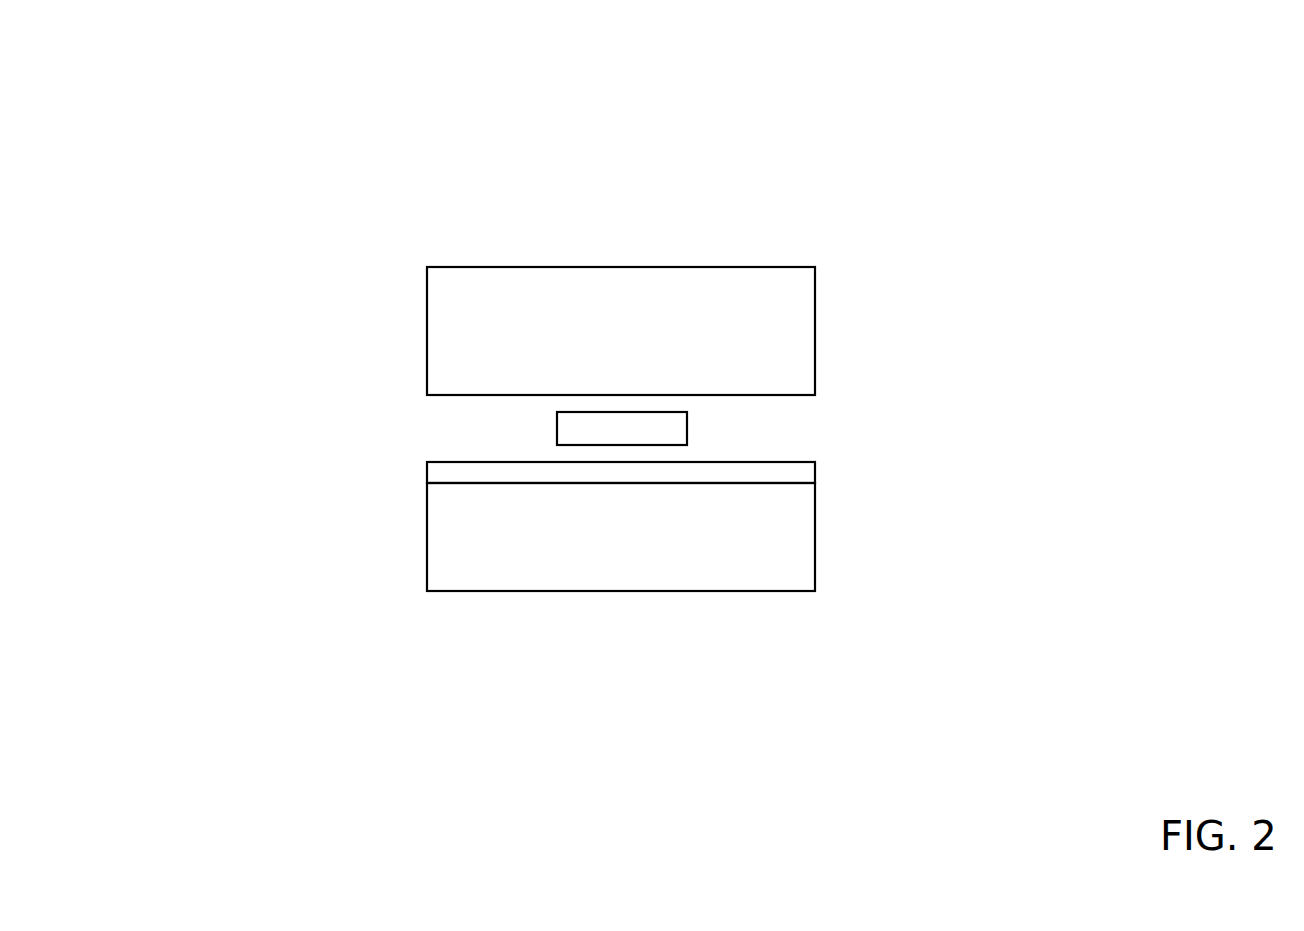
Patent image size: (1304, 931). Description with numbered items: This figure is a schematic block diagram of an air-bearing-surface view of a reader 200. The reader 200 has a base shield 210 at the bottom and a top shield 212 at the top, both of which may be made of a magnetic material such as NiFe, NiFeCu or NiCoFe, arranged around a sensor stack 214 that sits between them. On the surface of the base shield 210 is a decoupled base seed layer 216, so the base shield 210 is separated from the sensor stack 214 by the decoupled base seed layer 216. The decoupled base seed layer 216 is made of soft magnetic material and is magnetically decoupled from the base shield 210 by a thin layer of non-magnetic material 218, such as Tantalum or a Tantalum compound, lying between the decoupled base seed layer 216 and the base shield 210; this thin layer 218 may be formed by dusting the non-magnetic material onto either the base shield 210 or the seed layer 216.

The reader 200 is at (265, 103).
The base shield 210 is at (427, 572).
The top shield 212 is at (427, 298).
The sensor stack 214 is at (688, 429).
The decoupled base seed layer 216 is at (427, 471).
The thin layer of non-magnetic material 218 is at (786, 486).